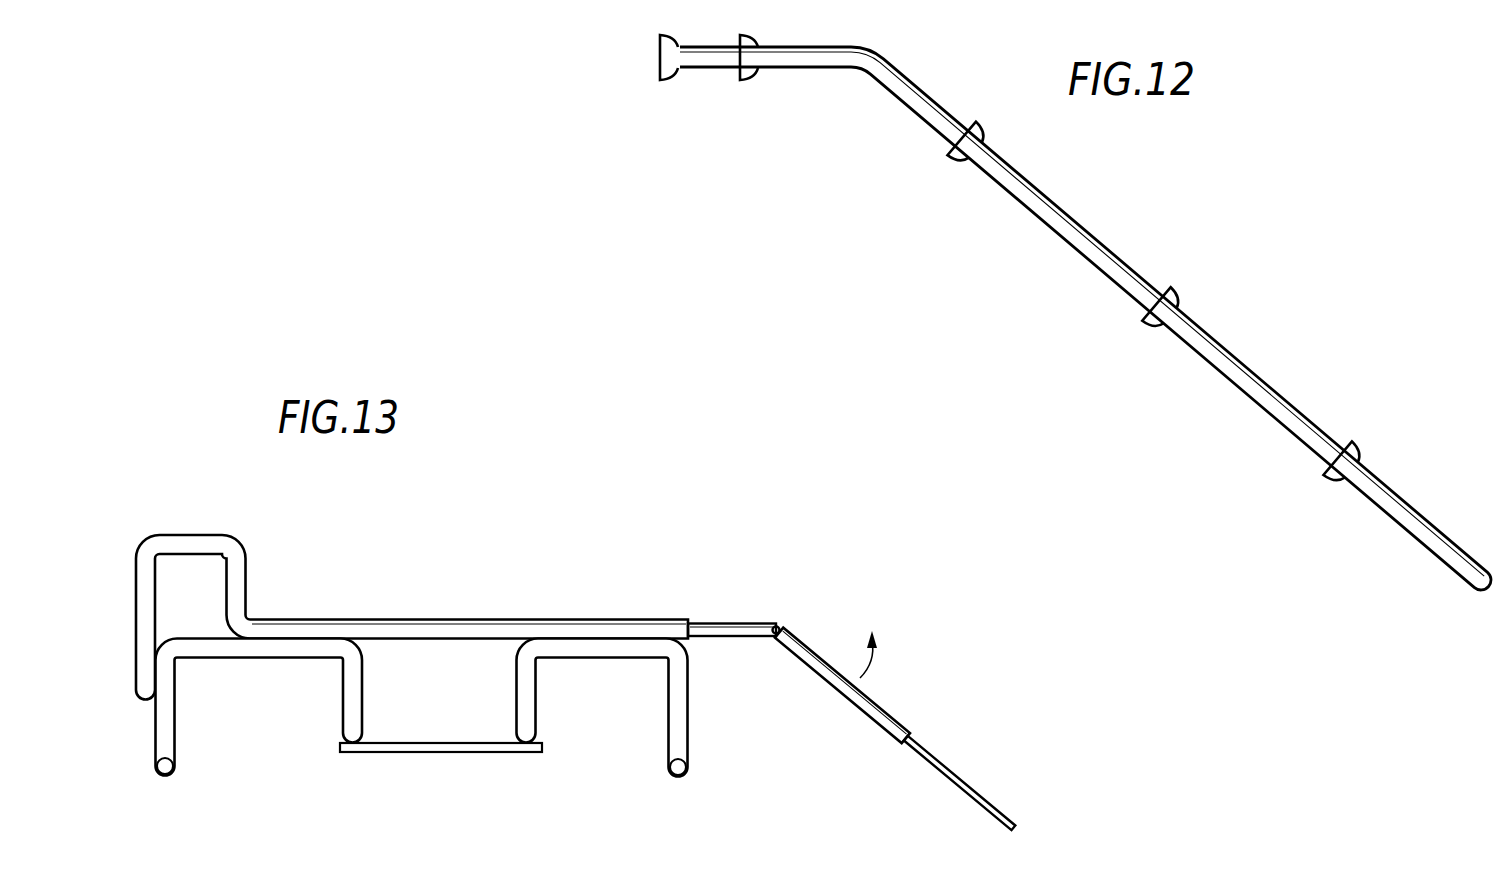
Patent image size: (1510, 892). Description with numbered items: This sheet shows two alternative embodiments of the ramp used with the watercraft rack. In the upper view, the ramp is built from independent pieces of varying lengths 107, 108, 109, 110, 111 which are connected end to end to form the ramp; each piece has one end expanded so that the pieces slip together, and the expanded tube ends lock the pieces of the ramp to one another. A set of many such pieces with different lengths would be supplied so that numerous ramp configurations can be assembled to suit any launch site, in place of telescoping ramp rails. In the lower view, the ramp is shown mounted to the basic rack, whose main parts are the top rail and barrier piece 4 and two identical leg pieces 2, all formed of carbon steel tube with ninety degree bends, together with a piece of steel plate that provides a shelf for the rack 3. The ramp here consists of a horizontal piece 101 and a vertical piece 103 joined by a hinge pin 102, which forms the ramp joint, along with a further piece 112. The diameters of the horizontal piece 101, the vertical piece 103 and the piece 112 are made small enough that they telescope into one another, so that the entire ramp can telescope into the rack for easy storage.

In FIG. 13, the leg piece 2 is at (172, 745).
In FIG. 13, the shelf for the rack 3 is at (453, 752).
In FIG. 13, the top rail and barrier piece 4 is at (389, 621).
In FIG. 13, the horizontal piece 101 is at (714, 635).
In FIG. 13, the hinge pin 102 is at (778, 627).
In FIG. 13, the vertical piece 103 is at (860, 704).
In FIG. 13, the telescoping ramp piece 112 is at (1005, 813).
In FIG. 12, the ramp piece 107 is at (723, 58).
In FIG. 12, the ramp piece 108 is at (917, 100).
In FIG. 12, the ramp piece 109 is at (1070, 228).
In FIG. 12, the ramp piece 110 is at (1240, 386).
In FIG. 12, the ramp piece 111 is at (1455, 550).